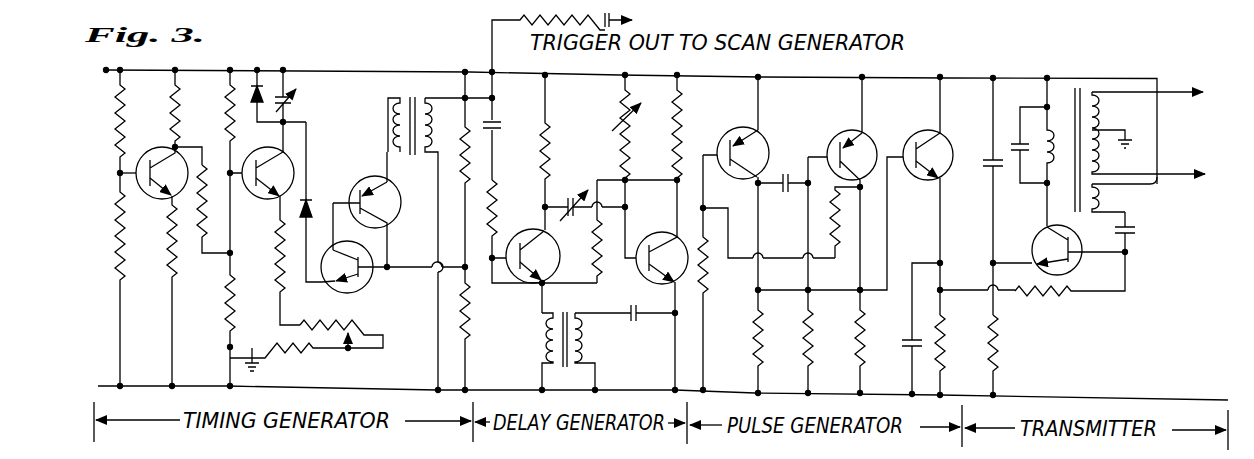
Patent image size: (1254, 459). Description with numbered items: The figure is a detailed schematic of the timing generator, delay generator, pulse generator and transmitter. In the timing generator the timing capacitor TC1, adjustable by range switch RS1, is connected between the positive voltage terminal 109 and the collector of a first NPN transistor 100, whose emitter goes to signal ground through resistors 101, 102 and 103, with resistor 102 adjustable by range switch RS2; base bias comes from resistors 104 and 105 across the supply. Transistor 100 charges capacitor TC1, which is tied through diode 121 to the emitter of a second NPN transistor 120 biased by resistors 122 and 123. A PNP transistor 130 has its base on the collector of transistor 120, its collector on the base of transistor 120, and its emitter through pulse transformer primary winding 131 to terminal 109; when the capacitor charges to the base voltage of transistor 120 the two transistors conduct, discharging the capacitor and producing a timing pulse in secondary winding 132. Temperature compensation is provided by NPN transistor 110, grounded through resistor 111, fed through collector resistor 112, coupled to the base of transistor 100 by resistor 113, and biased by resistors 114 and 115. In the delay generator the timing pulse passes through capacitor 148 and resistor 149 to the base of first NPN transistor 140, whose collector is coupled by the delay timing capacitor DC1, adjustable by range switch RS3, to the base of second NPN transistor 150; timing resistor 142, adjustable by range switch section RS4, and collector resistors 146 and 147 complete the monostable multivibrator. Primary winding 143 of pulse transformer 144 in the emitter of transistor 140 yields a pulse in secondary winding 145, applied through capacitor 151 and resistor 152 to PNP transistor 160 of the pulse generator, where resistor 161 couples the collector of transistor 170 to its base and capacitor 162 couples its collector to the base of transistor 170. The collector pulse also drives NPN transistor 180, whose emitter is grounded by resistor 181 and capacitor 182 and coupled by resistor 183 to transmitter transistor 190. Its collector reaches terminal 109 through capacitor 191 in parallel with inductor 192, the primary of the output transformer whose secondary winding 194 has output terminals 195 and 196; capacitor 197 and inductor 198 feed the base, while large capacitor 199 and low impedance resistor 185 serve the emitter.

The first NPN transistor 100 is at (270, 148).
The resistor 101 is at (276, 246).
The resistor 102 is at (364, 326).
The resistor 103 is at (290, 350).
The resistor 104 is at (226, 131).
The resistor 105 is at (228, 306).
The positive voltage terminal 109 is at (112, 66).
The NPN transistor 110 is at (150, 148).
The resistor 111 is at (166, 244).
The collector resistor 112 is at (184, 100).
The resistor 113 is at (207, 213).
The base biasing resistor 114 is at (116, 133).
The base biasing resistor 115 is at (116, 220).
The second NPN transistor 120 is at (370, 288).
The diode 121 is at (308, 199).
The resistor 122 is at (466, 140).
The resistor 123 is at (469, 310).
The PNP transistor 130 is at (398, 196).
The pulse transformer primary winding 131 is at (396, 96).
The secondary winding 132 is at (427, 97).
The first NPN transistor 140 is at (537, 232).
The timing resistor 142 is at (617, 113).
The primary winding 143 is at (546, 313).
The pulse transformer 144 is at (565, 368).
The secondary winding 145 is at (580, 313).
The collector resistor 146 is at (543, 157).
The collector resistor 147 is at (684, 113).
The capacitor 148 is at (496, 120).
The resistor 149 is at (495, 206).
The second NPN transistor 150 is at (660, 233).
The capacitor 151 is at (634, 320).
The resistor 152 is at (705, 278).
The PNP transistor 160 is at (758, 132).
The resistor 161 is at (838, 252).
The capacitor 162 is at (785, 170).
The transistor 170 is at (865, 131).
The NPN transistor 180 is at (947, 140).
The resistor 181 is at (943, 356).
The capacitor 182 is at (912, 341).
The resistor 183 is at (1040, 299).
The resistor 185 is at (996, 350).
The NPN transistor 190 is at (1030, 242).
The capacitor 191 is at (1013, 135).
The inductor 192 is at (1055, 123).
The secondary winding 194 is at (1105, 112).
The output terminal 195 is at (1172, 172).
The output terminal 196 is at (1168, 81).
The capacitor 197 is at (1130, 228).
The inductor 198 is at (1096, 199).
The large capacitor 199 is at (985, 170).
The range switch RS1 is at (298, 93).
The range switch RS2 is at (350, 350).
The range switch RS3 is at (592, 185).
The range switch section RS4 is at (635, 78).
The timing capacitor TC1 is at (300, 105).
The delay generator timing capacitor DC1 is at (562, 198).